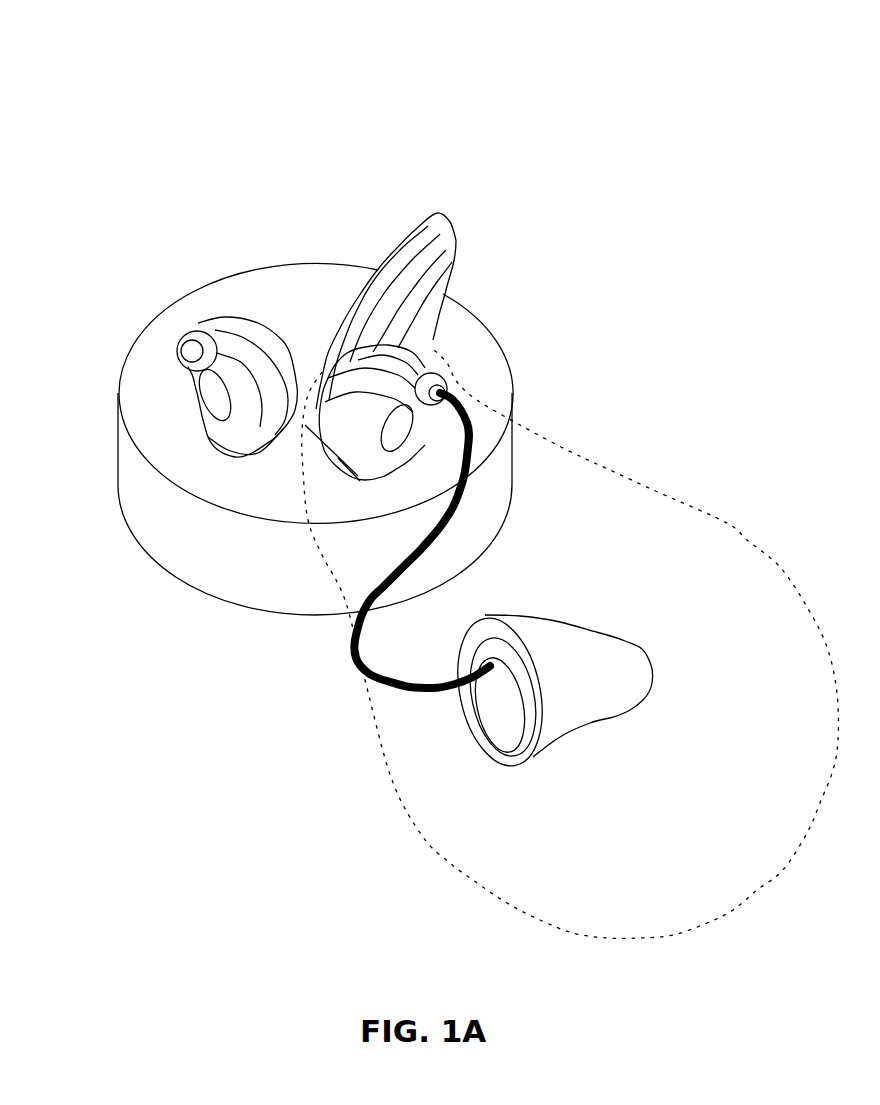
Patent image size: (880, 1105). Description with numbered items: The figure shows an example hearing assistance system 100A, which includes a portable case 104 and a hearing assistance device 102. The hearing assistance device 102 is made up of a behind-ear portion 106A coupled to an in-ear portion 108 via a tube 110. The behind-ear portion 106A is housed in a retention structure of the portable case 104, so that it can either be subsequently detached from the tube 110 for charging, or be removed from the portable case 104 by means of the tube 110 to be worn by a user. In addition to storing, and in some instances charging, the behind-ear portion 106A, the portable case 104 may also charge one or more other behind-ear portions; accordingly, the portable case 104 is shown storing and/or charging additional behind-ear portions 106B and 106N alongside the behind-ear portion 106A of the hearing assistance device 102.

The system 100A is at (590, 87).
The hearing assistance device 102 is at (677, 530).
The portable case 104 is at (112, 470).
The behind-ear portion 106A is at (317, 463).
The behind ear portion 106B is at (430, 230).
The behind ear portion 106N is at (233, 312).
The in-ear portion 108 is at (615, 677).
The tube 110 is at (345, 652).